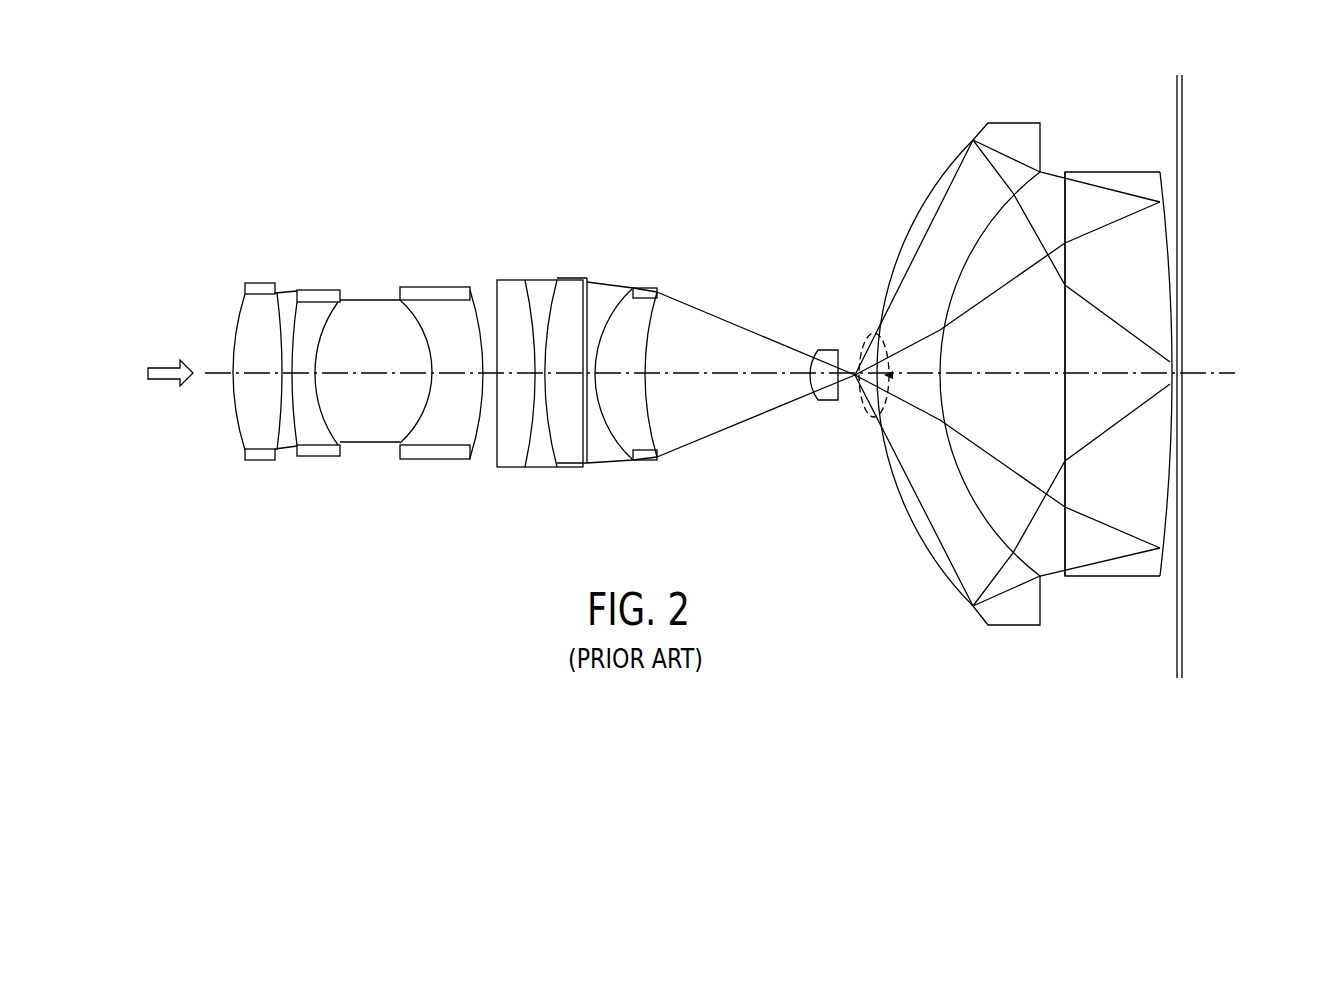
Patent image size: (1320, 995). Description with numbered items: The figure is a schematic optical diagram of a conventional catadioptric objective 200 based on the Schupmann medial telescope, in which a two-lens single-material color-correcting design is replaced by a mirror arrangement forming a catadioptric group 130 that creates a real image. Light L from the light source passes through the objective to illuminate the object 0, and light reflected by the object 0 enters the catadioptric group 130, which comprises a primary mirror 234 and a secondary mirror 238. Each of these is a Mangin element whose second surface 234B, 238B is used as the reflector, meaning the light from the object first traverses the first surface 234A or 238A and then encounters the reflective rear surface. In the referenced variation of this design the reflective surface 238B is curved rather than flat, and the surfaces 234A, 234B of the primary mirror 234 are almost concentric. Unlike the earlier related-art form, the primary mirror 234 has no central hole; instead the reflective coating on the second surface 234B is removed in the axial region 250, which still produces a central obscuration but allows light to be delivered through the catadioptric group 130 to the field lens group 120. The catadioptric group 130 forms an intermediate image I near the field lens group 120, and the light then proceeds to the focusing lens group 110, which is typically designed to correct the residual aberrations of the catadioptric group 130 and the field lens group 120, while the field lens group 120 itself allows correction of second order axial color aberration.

The conventional embodiment 200 is at (318, 163).
The focusing lens group 110 is at (660, 262).
The light L is at (174, 364).
The field lens group 120 is at (818, 336).
The intermediate image I is at (855, 381).
The axial region 250 is at (854, 392).
The catadioptric group 130 is at (1193, 683).
The primary mirror 234 is at (1012, 617).
The first surface of the primary mirror 234A is at (972, 219).
The second surface of the primary mirror 234B is at (932, 164).
The secondary mirror 238 is at (1122, 568).
The first surface of the secondary mirror 238A is at (1078, 258).
The second surface of the secondary mirror 238B is at (1168, 176).
The object 0 is at (1184, 652).